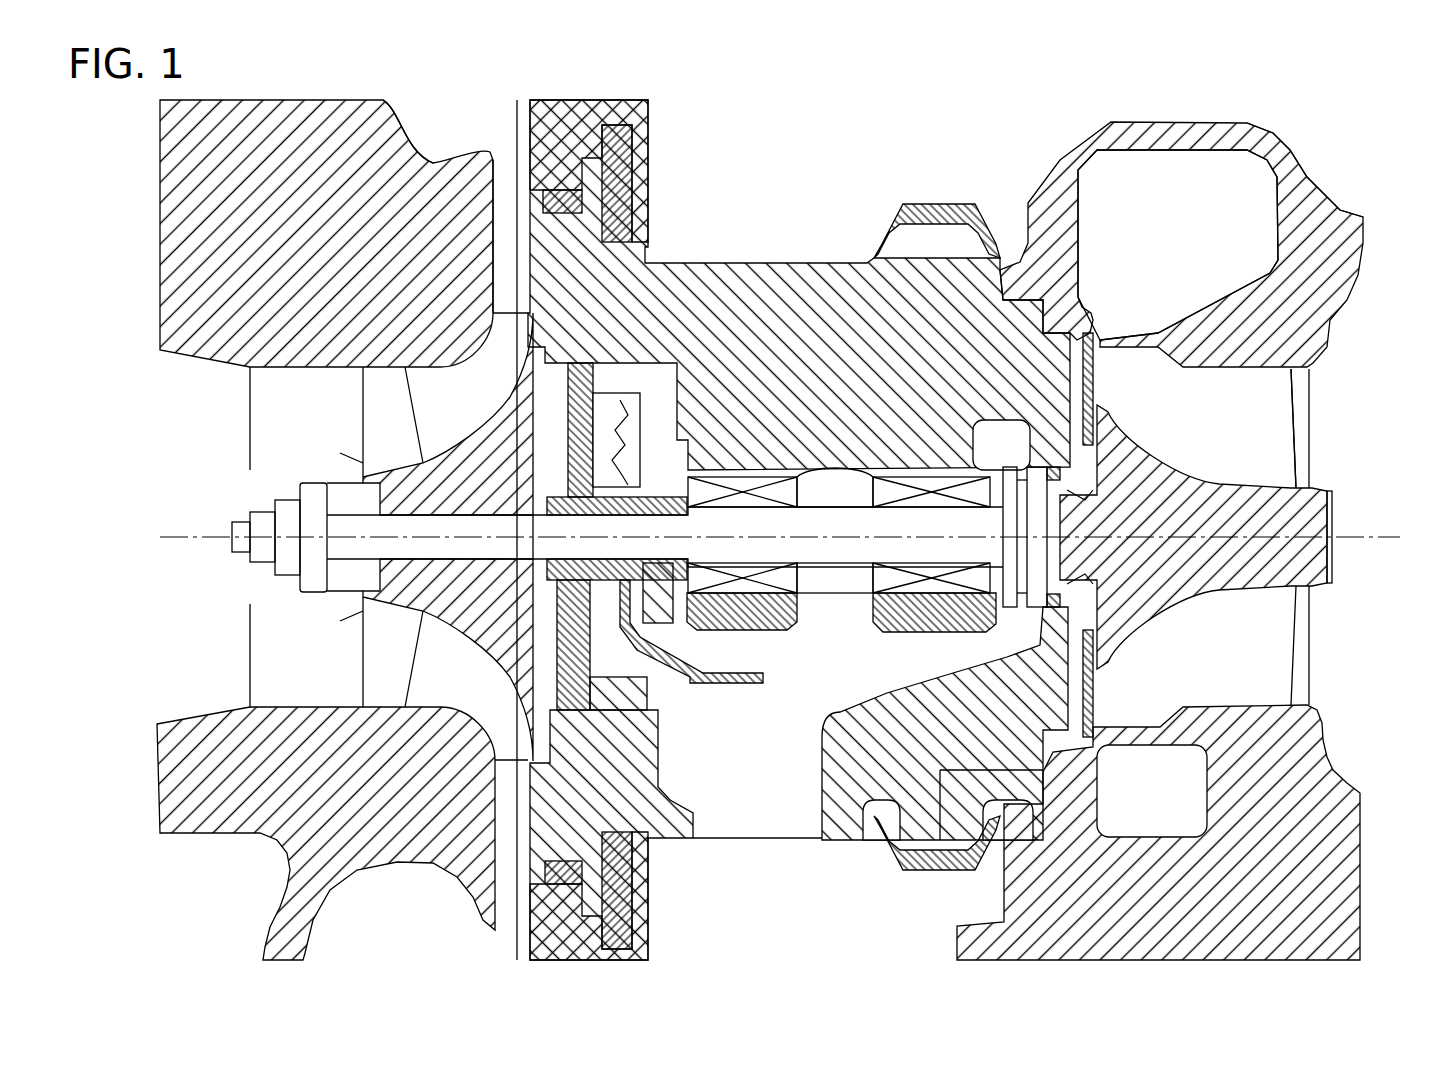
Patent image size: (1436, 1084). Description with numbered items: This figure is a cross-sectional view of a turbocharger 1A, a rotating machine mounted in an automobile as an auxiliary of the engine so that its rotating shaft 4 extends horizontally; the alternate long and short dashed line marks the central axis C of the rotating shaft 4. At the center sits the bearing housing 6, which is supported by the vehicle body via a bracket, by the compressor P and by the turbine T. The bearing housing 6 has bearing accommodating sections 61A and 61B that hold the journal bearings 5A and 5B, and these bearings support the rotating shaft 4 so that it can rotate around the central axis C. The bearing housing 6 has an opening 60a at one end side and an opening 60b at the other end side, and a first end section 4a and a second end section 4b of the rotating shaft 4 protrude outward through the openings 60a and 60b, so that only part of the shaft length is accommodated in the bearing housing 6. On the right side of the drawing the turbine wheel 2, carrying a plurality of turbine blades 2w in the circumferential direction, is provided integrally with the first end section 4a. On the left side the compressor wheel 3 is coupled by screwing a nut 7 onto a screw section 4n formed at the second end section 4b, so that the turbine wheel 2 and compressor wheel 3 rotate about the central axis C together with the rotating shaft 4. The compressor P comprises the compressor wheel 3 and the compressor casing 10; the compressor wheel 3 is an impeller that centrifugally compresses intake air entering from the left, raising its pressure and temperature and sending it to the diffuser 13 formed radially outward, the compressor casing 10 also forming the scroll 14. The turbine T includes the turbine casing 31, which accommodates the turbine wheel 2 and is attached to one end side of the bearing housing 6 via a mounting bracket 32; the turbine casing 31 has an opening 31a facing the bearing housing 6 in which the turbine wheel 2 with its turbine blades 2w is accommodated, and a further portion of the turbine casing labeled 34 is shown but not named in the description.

The turbocharger 1A is at (978, 184).
The turbine wheel 2 is at (1248, 455).
The turbine blades 2w is at (1270, 402).
The compressor wheel 3 is at (363, 455).
The rotating shaft 4 is at (383, 598).
The first end section 4a is at (1323, 600).
The second end section 4b is at (247, 553).
The screw section 4n is at (345, 582).
The journal bearing 5A is at (985, 478).
The journal bearing 5B is at (712, 478).
The bearing housing 6 is at (689, 470).
The nut 7 is at (288, 478).
The compressor casing 10 is at (363, 130).
The diffuser 13 is at (512, 197).
The scroll 14 is at (402, 100).
The compressor P is at (440, 163).
The turbine casing 31 is at (1348, 211).
The opening 31a is at (1090, 328).
The mounting bracket 32 is at (940, 200).
The scroll passage 34 is at (1185, 165).
The turbine T is at (1310, 205).
The central axis C is at (1358, 529).
The opening 60a is at (1063, 590).
The opening 60b is at (547, 693).
The bearing accommodating section 61A is at (990, 624).
The bearing accommodating section 61B is at (745, 633).